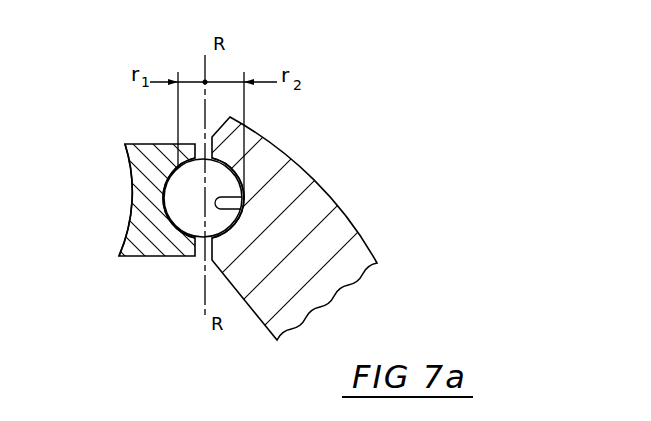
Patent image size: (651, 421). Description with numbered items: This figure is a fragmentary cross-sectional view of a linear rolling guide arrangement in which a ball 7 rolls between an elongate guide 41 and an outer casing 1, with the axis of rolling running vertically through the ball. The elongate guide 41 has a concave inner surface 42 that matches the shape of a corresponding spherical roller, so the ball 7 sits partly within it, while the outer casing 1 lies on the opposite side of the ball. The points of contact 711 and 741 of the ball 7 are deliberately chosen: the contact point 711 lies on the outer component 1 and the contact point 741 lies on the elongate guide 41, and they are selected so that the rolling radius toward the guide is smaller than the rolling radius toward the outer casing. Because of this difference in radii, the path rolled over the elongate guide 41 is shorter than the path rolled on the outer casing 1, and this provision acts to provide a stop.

The outer casing 1 is at (287, 167).
The ball 7 is at (178, 205).
The elongate guide 41 is at (131, 167).
The inner surface 42 is at (131, 200).
The point of contact 711 is at (226, 198).
The point of contact 741 is at (190, 162).